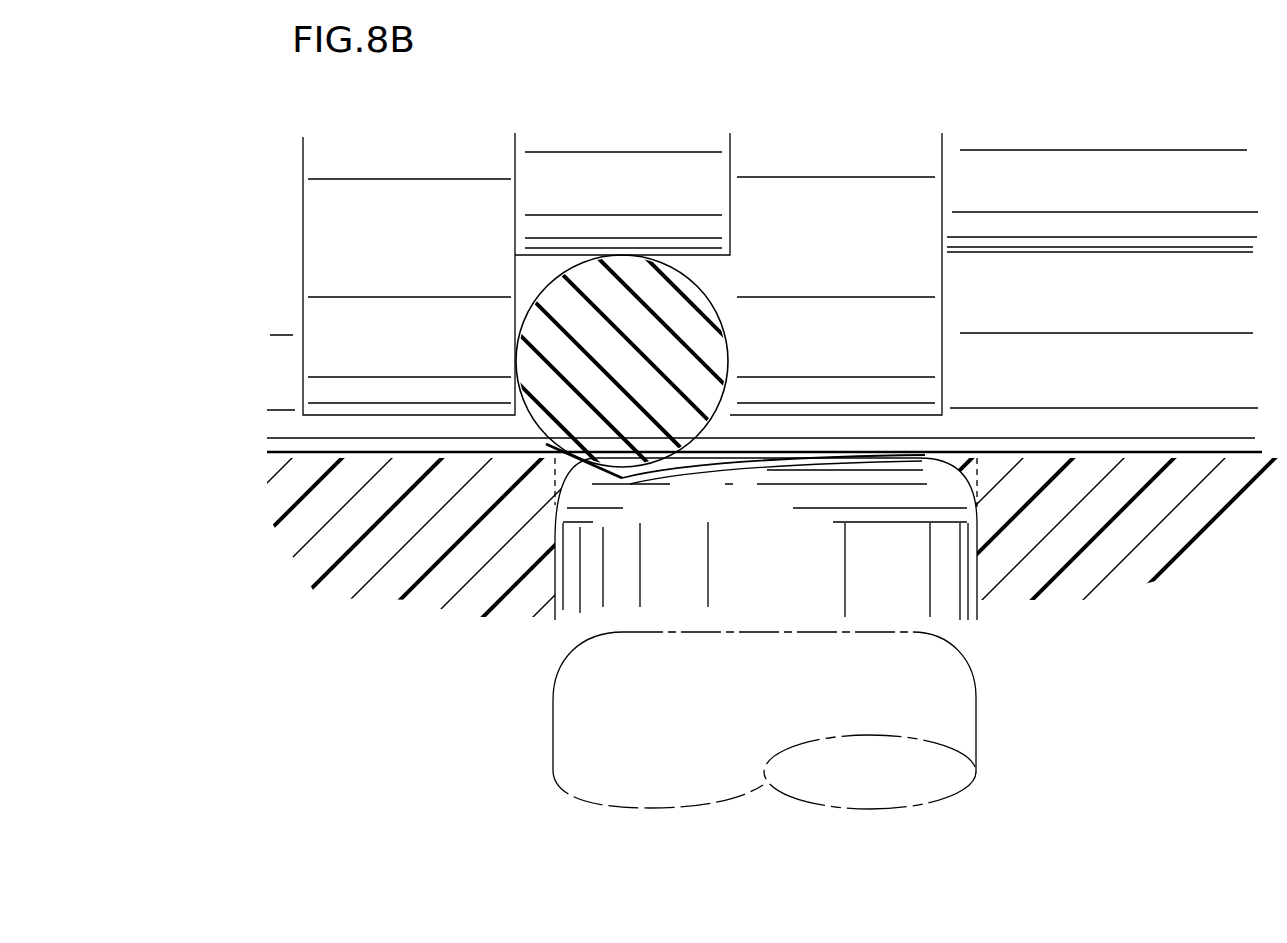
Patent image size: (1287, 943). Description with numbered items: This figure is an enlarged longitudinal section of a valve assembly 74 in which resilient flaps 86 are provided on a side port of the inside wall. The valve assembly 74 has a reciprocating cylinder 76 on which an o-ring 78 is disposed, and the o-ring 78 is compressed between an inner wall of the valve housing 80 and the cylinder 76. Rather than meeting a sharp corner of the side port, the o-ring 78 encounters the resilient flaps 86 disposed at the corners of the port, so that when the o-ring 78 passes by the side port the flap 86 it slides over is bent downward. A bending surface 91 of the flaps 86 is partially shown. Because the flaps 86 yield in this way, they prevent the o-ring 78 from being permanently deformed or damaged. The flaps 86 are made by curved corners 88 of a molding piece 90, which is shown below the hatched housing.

The valve assembly 74 is at (725, 263).
The reciprocating cylinder 76 is at (323, 255).
The o-ring 78 is at (727, 343).
The valve housing 80 is at (293, 482).
The resilient flaps 86 is at (570, 467).
The curved corners 88 is at (577, 650).
The molding piece 90 is at (977, 708).
The bending surface 91 is at (658, 468).